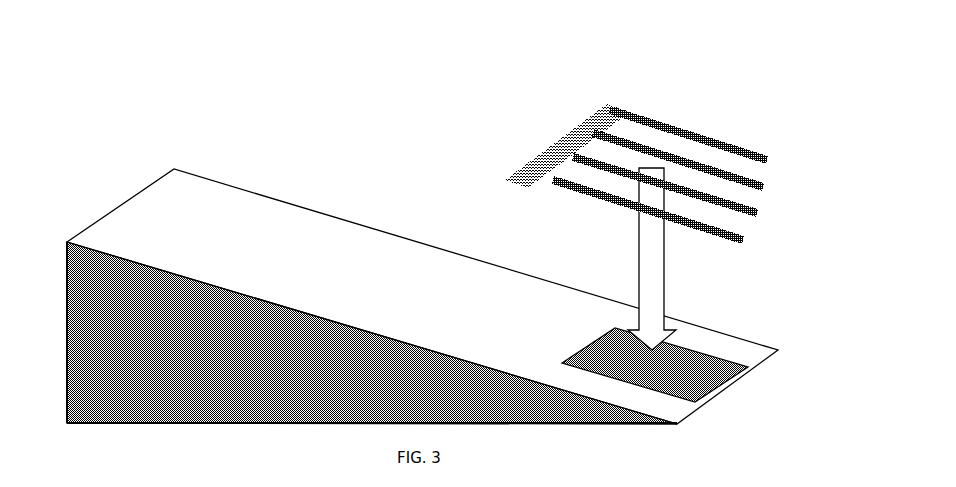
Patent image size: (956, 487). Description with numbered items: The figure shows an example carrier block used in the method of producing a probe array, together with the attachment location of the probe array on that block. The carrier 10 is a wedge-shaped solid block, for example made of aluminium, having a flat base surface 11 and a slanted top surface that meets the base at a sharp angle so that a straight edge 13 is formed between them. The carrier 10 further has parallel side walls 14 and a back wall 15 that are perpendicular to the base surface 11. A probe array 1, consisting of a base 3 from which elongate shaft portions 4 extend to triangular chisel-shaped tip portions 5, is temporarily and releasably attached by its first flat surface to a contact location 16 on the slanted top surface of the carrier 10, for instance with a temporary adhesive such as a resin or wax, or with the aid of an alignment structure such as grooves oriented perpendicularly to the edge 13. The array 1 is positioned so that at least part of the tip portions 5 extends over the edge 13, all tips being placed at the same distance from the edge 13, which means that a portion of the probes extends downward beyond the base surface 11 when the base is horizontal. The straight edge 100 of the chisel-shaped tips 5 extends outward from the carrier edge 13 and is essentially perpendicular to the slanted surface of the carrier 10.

The probe array 1 is at (660, 125).
The base 3 is at (572, 130).
The elongate shaft portions 4 is at (687, 138).
The triangular chisel-shaped tip portions 5 is at (762, 160).
The straight edge 100 is at (773, 163).
The carrier 10 is at (411, 295).
The flat base surface 11 is at (493, 423).
The straight edge 13 is at (274, 232).
The parallel side walls 14 is at (182, 392).
The back wall 15 is at (65, 280).
The contact location 16 is at (703, 380).